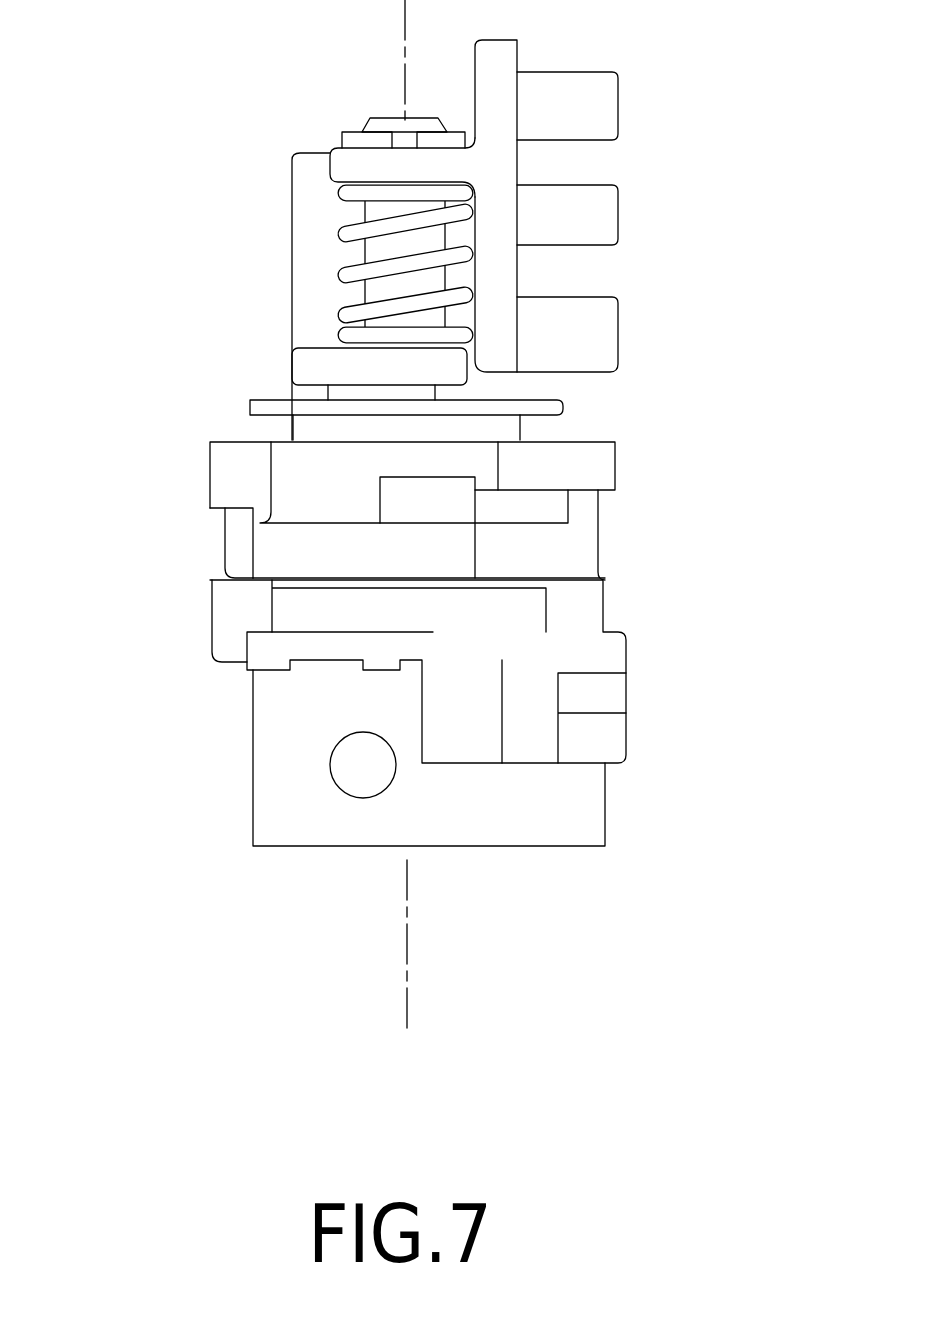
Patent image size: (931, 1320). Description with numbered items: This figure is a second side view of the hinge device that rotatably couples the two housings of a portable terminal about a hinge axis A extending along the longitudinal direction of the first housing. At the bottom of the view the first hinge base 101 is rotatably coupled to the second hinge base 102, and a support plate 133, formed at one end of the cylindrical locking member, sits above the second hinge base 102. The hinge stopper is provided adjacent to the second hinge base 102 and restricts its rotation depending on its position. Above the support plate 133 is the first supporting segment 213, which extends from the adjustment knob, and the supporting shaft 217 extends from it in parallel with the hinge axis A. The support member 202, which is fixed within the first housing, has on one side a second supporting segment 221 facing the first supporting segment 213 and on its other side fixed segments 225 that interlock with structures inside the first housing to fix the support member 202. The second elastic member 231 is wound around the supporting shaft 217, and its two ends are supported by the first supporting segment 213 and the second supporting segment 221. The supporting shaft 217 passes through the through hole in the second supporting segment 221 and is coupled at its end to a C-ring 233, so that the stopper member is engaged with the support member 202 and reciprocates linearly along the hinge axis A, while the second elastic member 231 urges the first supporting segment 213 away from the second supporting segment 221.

The first hinge base 101 is at (655, 695).
The second hinge base 102 is at (635, 507).
The support plate 133 is at (563, 405).
The support member 202 is at (634, 206).
The first supporting segment 213 is at (310, 372).
The supporting shaft 217 is at (357, 298).
The second supporting segment 221 is at (340, 166).
The fixed segments 225 is at (600, 113).
The second elastic member 231 is at (338, 237).
The C-ring 233 is at (340, 140).
The hinge axis A is at (407, 965).